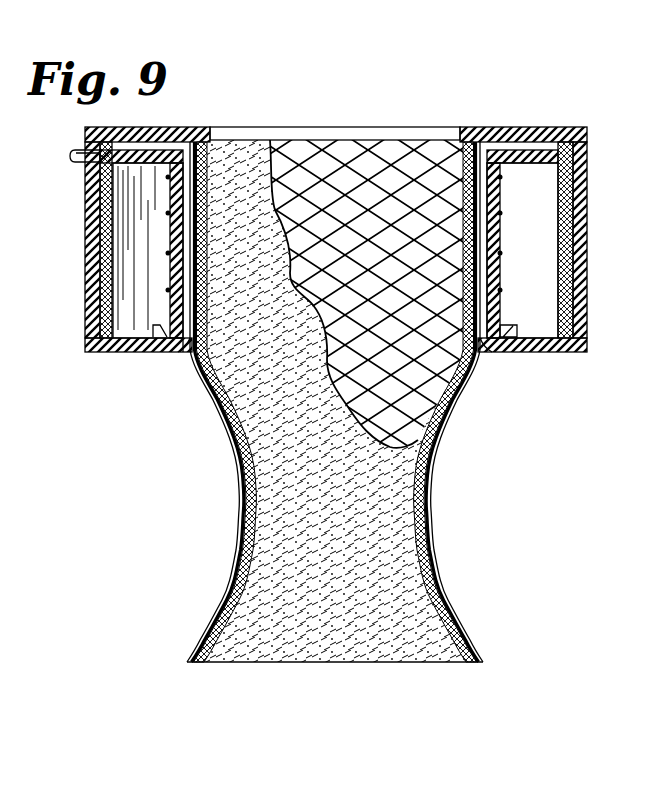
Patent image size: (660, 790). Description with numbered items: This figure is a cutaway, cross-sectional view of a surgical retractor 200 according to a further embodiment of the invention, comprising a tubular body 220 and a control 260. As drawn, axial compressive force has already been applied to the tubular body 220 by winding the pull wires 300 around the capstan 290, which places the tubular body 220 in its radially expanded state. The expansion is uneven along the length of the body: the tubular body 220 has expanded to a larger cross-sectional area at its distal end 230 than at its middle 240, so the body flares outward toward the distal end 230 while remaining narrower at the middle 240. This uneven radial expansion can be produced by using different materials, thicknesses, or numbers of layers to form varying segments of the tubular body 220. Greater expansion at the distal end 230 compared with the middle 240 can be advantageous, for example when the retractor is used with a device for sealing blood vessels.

The surgical retractor 200 is at (498, 98).
The tubular body 220 is at (425, 505).
The distal end 230 is at (282, 664).
The middle 240 is at (243, 465).
The control 260 is at (585, 232).
The capstan 290 is at (500, 234).
The pull wires 300 is at (190, 352).